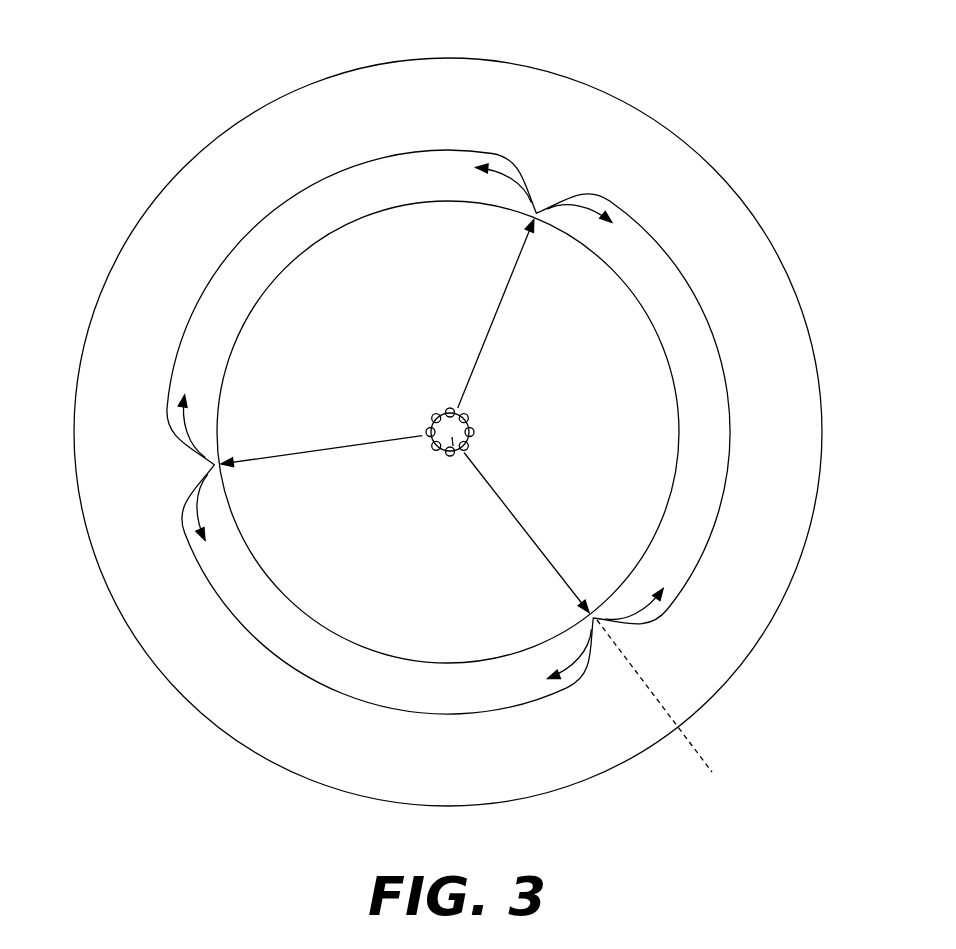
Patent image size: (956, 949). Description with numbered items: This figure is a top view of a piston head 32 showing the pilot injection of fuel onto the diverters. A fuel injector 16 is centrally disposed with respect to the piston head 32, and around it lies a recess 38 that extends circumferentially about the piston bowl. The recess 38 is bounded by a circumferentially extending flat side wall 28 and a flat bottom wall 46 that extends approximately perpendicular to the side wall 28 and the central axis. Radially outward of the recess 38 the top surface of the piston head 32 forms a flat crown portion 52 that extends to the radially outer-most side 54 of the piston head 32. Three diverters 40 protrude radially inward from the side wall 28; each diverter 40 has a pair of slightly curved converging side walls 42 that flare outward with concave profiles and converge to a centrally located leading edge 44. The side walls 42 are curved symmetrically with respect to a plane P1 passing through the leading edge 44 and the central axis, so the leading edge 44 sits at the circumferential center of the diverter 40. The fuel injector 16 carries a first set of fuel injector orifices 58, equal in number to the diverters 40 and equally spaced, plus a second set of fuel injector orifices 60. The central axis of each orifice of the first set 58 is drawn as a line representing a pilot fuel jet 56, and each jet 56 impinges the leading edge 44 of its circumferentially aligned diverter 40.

The fuel injector 16 is at (467, 458).
The side wall 28 is at (711, 343).
The piston head 32 is at (182, 667).
The recess 38 is at (653, 346).
The diverter 40 is at (518, 218).
The converging side walls 42 is at (535, 210).
The leading edge 44 is at (538, 216).
The bottom wall 46 is at (706, 427).
The crown portion 52 is at (461, 74).
The radially outer-most side 54 is at (142, 214).
The pilot fuel jet 56 is at (500, 195).
The first set of fuel injector orifices 58 is at (456, 408).
The second set of fuel injector orifices 60 is at (439, 418).
The plane P1 is at (700, 752).